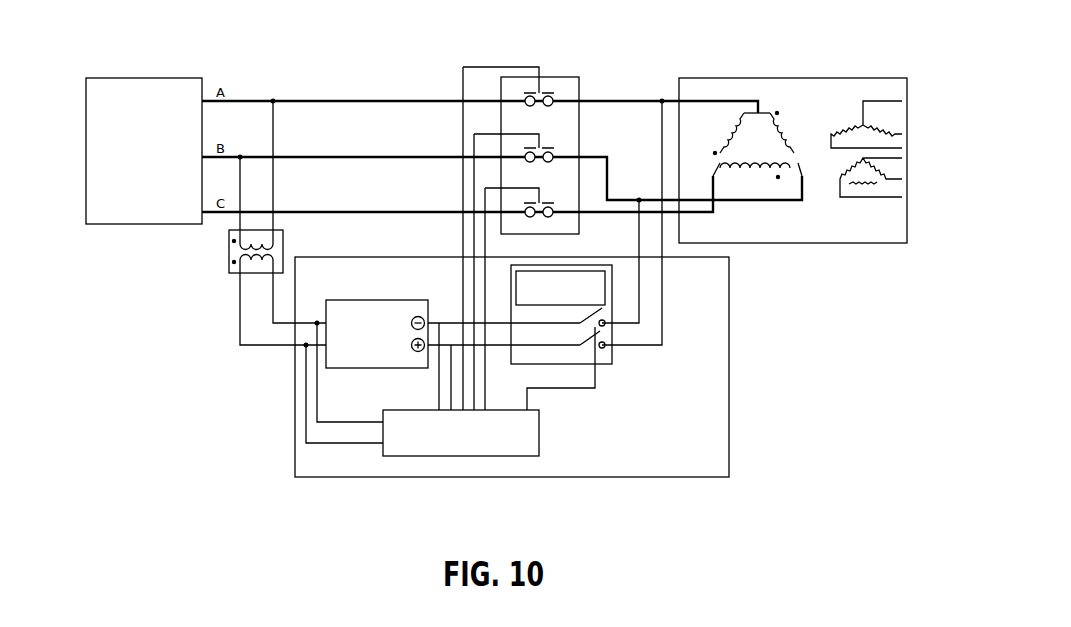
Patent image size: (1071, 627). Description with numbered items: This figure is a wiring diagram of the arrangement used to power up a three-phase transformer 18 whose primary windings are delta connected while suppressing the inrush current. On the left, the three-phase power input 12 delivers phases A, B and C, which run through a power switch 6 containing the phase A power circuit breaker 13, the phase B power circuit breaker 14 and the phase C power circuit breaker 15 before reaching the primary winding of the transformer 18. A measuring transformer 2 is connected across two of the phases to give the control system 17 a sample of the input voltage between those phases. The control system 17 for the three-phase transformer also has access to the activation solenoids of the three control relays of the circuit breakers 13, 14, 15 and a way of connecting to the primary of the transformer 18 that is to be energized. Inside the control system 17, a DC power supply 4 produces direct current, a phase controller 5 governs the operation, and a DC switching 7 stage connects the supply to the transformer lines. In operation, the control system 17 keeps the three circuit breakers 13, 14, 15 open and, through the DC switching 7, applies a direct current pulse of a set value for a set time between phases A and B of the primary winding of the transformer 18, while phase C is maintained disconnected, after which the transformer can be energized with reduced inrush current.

The three-phase power input 12 is at (143, 226).
The measuring transformer 2 is at (228, 260).
The control system for three-phase transformer 17 is at (372, 257).
The DC power supply 4 is at (341, 299).
The phase controller 5 is at (540, 428).
The power switch 6 is at (580, 88).
The phase A power circuit breaker 13 is at (522, 109).
The phase B power circuit breaker 14 is at (522, 165).
The phase C power circuit breaker 15 is at (522, 220).
The DC switching 7 is at (596, 271).
The three-phase transformer with primary winding delta connected 18 is at (843, 78).